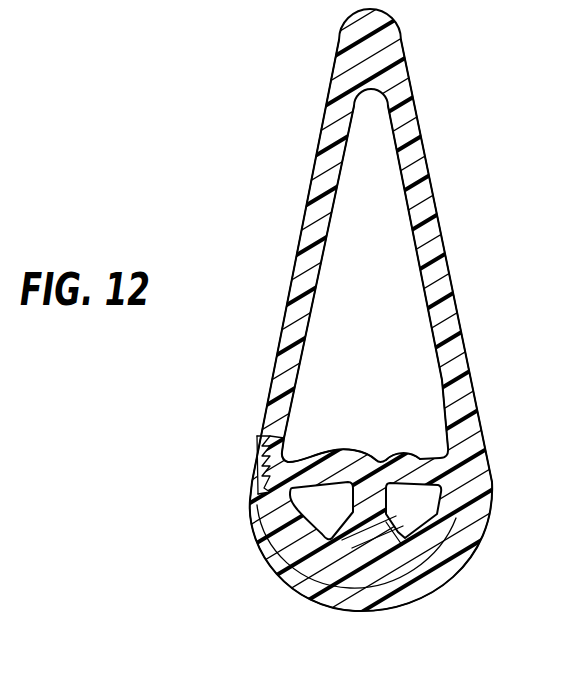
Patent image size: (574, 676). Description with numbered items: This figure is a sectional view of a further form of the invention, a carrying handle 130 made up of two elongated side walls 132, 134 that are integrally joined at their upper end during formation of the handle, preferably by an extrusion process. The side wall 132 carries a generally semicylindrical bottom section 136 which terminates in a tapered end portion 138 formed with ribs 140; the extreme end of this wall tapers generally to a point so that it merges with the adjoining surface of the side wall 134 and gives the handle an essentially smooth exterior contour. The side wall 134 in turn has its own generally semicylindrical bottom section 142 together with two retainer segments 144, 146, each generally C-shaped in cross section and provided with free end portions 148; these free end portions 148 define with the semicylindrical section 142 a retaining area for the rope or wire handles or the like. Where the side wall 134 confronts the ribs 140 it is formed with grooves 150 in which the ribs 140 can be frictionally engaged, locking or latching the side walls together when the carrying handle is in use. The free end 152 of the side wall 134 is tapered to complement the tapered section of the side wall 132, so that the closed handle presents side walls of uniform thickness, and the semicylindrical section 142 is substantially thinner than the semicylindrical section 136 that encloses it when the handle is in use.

The carrying handle 130 is at (469, 289).
The side wall 132 is at (440, 315).
The side wall 134 is at (292, 325).
The semicylindrical bottom section 136 is at (374, 600).
The tapered end portion 138 is at (252, 488).
The ribs 140 is at (268, 441).
The semicylindrical bottom section 142 is at (307, 543).
The retainer segment 144 is at (340, 459).
The retainer segment 146 is at (408, 459).
The free end portions 148 is at (397, 530).
The grooves 150 is at (282, 460).
The free end 152 is at (441, 377).